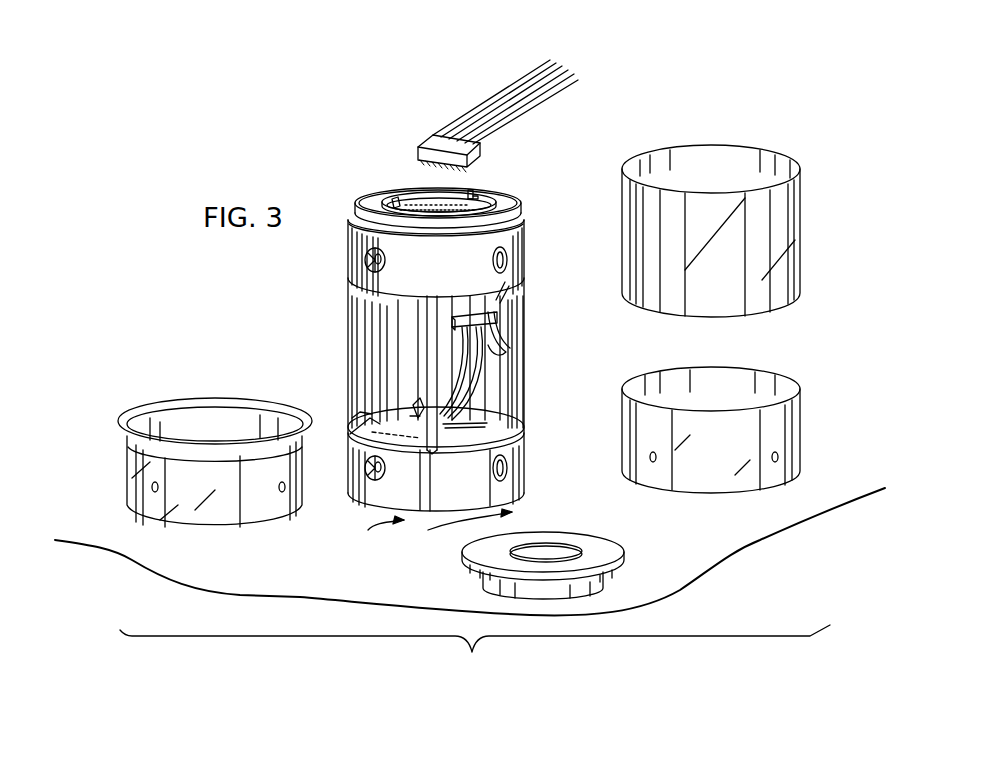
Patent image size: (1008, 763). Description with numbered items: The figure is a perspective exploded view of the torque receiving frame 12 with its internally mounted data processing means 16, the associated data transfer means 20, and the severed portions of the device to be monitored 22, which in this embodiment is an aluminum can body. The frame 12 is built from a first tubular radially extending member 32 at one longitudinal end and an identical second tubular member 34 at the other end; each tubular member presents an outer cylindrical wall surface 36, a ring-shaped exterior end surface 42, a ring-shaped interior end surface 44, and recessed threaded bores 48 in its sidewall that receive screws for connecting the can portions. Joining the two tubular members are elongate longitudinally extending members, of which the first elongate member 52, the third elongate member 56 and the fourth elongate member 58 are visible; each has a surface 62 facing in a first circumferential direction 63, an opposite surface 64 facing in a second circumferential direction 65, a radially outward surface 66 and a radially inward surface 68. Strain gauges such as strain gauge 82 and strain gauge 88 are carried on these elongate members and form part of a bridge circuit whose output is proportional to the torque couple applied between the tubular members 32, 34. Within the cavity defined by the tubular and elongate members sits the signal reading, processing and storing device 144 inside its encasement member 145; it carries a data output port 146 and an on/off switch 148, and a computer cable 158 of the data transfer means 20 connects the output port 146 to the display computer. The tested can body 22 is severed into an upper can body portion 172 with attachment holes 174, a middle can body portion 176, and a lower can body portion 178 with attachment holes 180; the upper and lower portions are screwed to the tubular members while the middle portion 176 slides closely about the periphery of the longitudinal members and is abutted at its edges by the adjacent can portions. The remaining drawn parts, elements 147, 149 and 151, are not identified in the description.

The torque receiving frame 12 is at (340, 194).
The data processing means 16 is at (370, 338).
The data transfer means 20 is at (510, 78).
The device to be monitored 22 is at (130, 398).
The first radially extending member 32 is at (528, 462).
The second radially extending member 34 is at (528, 262).
The outer cylindrical wall surface 36 is at (510, 272).
The exterior end surface 42 is at (516, 214).
The interior end surface 44 is at (518, 437).
The recessed threaded bores 48 is at (366, 260).
The first elongate longitudinally extending member 52 is at (418, 360).
The third elongate longitudinally extending member 56 is at (346, 320).
The fourth elongate longitudinally extending member 58 is at (527, 357).
The axially and radially extending surface 62 is at (518, 399).
The first circumferential direction 63 is at (368, 530).
The axially and radially extending surface 64 is at (362, 407).
The second circumferential direction 65 is at (428, 530).
The axially and circumferentially extending surface 66 is at (522, 382).
The axially and circumferentially extending surface 68 is at (366, 418).
The strain gauge 82 is at (414, 414).
The strain gauge 88 is at (368, 470).
The signal reading, processing and storing device 144 is at (420, 206).
The encasement member 145 is at (490, 199).
The data output port 146 is at (408, 206).
The retaining ring 147 is at (604, 546).
The on/off switch 148 is at (472, 198).
The ring hub 149 is at (604, 583).
The ring aperture 151 is at (620, 560).
The computer cable 158 is at (466, 130).
The upper can body portion 172 is at (135, 456).
The attachment holes 174 is at (152, 491).
The middle can body portion 176 is at (800, 200).
The lower can body portion 178 is at (803, 401).
The attachment holes 180 is at (778, 457).